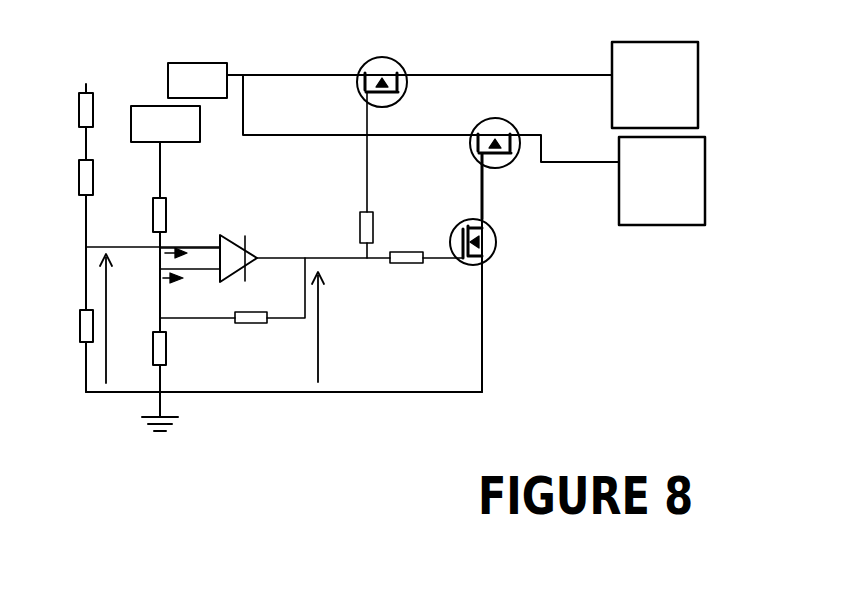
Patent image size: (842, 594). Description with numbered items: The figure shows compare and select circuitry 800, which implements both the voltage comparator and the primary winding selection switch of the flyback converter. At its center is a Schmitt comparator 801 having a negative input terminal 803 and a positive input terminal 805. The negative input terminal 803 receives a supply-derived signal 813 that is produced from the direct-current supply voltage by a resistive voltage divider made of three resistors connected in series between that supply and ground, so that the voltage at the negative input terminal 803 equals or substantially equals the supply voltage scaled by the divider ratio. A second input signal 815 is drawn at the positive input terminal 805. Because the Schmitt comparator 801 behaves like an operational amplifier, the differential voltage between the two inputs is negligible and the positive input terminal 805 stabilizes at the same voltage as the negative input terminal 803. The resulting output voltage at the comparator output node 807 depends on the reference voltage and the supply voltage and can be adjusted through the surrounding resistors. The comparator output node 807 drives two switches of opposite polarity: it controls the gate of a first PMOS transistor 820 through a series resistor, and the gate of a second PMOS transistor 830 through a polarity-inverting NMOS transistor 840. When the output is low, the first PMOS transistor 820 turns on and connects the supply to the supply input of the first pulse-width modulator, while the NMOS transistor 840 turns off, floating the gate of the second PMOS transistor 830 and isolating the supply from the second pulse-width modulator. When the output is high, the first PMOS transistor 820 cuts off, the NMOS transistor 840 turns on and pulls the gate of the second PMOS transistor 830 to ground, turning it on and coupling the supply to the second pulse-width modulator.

The compare and select circuitry 800 is at (381, 232).
The Schmitt comparator 801 is at (222, 235).
The negative input terminal 803 is at (213, 246).
The positive input terminal 805 is at (213, 270).
The comparator output node 807 is at (306, 258).
The VDC signal 813 is at (168, 253).
The second input signal 815 is at (165, 278).
The PMOS transistor 820 is at (380, 57).
The PMOS transistor 830 is at (490, 118).
The NMOS transistor 840 is at (497, 243).